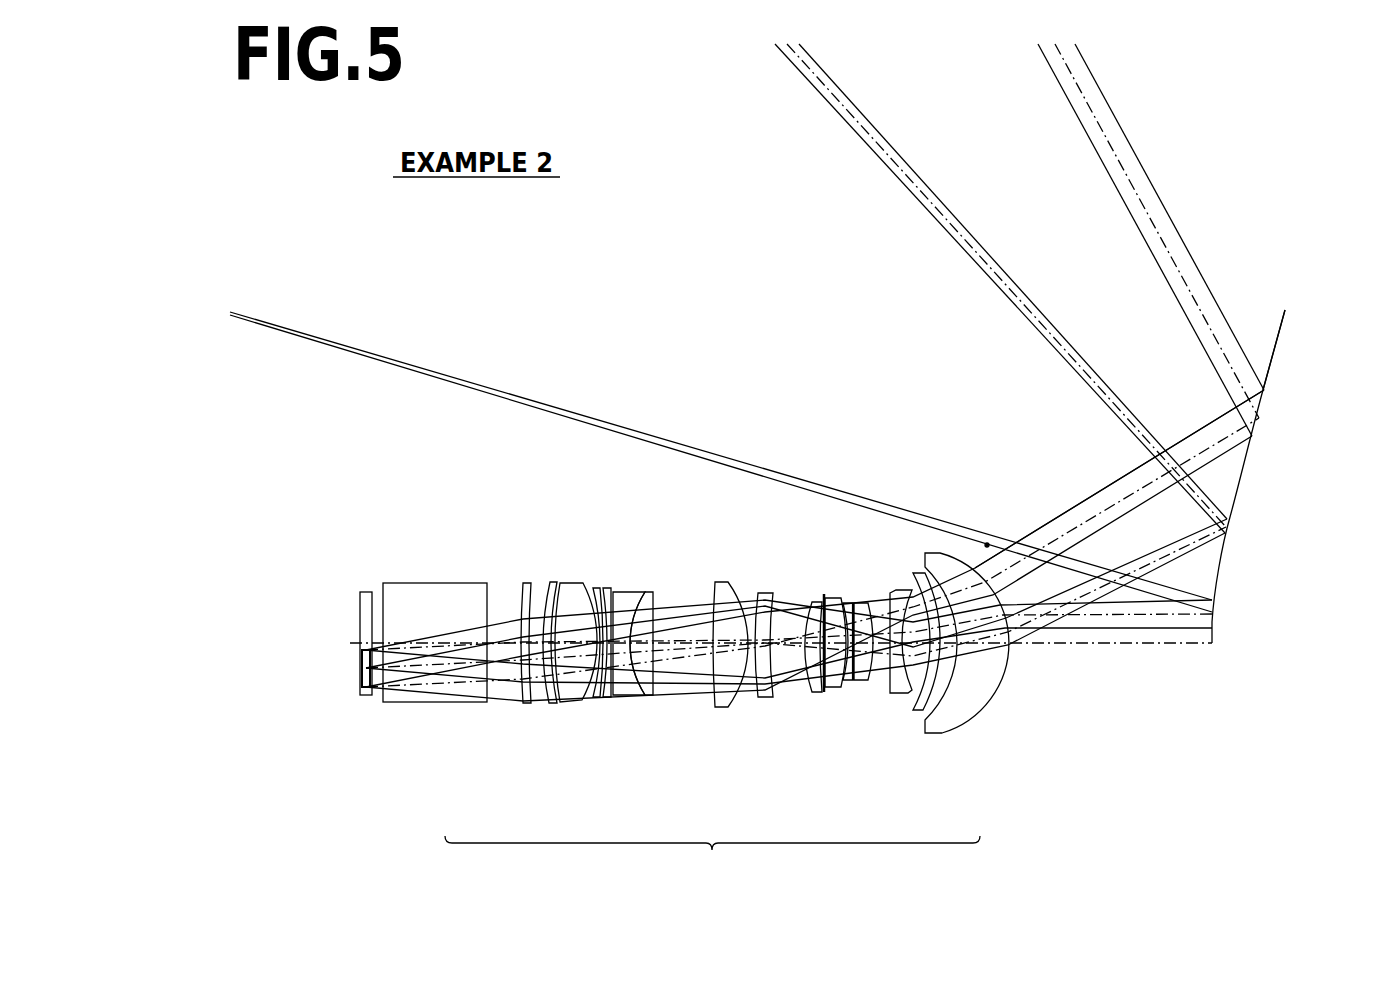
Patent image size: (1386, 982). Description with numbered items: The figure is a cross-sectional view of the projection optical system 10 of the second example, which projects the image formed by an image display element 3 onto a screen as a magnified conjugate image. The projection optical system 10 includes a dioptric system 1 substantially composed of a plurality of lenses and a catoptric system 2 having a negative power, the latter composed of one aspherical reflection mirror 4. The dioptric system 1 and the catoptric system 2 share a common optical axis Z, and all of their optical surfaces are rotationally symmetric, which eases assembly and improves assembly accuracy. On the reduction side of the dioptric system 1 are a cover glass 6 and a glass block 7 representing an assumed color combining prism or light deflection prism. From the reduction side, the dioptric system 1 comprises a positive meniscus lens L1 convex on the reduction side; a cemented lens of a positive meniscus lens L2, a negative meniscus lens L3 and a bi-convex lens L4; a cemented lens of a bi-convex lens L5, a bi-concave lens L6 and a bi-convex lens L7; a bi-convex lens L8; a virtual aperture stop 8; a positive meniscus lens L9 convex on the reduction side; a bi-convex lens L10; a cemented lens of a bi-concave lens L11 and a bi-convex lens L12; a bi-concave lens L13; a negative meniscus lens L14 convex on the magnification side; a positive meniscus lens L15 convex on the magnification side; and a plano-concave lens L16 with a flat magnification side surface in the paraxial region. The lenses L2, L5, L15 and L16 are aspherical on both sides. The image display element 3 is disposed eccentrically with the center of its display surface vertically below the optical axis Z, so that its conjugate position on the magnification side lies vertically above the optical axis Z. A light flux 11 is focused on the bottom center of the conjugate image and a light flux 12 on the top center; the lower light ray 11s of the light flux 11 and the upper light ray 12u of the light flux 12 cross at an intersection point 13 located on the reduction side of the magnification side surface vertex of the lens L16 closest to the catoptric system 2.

The dioptric system 1 is at (712, 850).
The catoptric system 2 is at (1250, 484).
The image display element 3 is at (361, 676).
The aspherical reflection mirror 4 is at (1273, 355).
The cover glass 6 is at (366, 697).
The glass block 7 is at (408, 704).
The aperture stop 8 is at (750, 698).
The projection optical system 10 is at (422, 492).
The light flux 11 is at (576, 412).
The lower light ray 11s is at (793, 484).
The light flux 12 is at (1152, 187).
The upper light ray 12u is at (1085, 486).
The intersection point 13 is at (986, 544).
The optical axis Z is at (1125, 647).
The positive meniscus lens L1 is at (527, 705).
The positive meniscus lens L2 is at (548, 705).
The negative meniscus lens L3 is at (557, 705).
The bi-convex lens L4 is at (584, 703).
The bi-convex lens L5 is at (606, 700).
The bi-concave lens L6 is at (628, 697).
The bi-convex lens L7 is at (651, 697).
The bi-convex lens L8 is at (722, 707).
The positive meniscus lens L9 is at (762, 698).
The bi-convex lens L10 is at (812, 693).
The bi-concave lens L11 is at (832, 688).
The bi-convex lens L12 is at (848, 683).
The bi-concave lens L13 is at (868, 683).
The negative meniscus lens L14 is at (900, 697).
The positive meniscus lens L15 is at (920, 714).
The plano-concave lens L16 is at (935, 733).